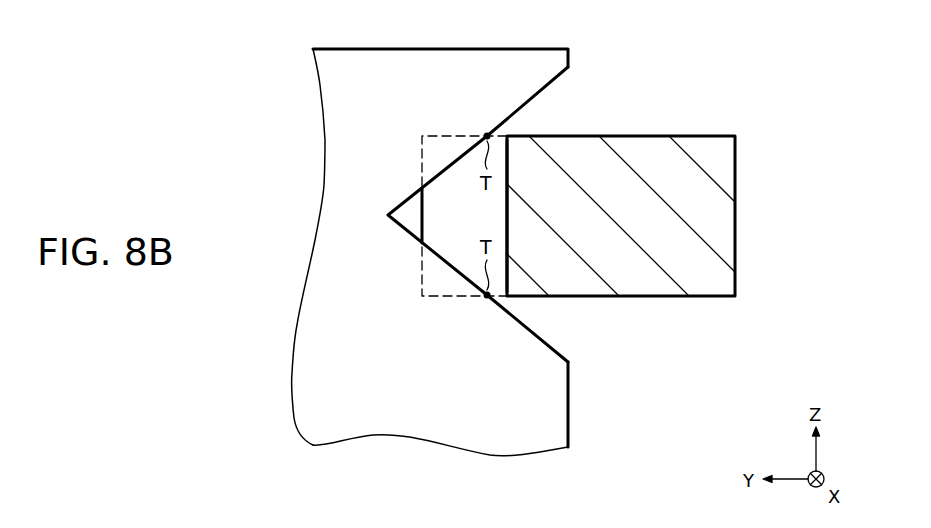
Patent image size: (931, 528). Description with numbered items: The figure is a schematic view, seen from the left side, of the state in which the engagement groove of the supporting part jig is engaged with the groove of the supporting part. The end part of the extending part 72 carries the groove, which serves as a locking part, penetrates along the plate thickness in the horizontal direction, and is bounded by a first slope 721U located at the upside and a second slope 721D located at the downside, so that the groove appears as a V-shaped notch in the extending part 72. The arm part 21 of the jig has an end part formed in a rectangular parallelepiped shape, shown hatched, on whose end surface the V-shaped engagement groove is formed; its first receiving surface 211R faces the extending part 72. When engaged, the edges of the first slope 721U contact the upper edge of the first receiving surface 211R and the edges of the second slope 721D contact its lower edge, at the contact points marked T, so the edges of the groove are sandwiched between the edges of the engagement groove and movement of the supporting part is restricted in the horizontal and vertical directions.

The extending part 72 is at (373, 436).
The first slope 721U is at (545, 92).
The second slope 721D is at (546, 341).
The arm part 21 is at (735, 158).
The first receiving surface 211R is at (507, 218).